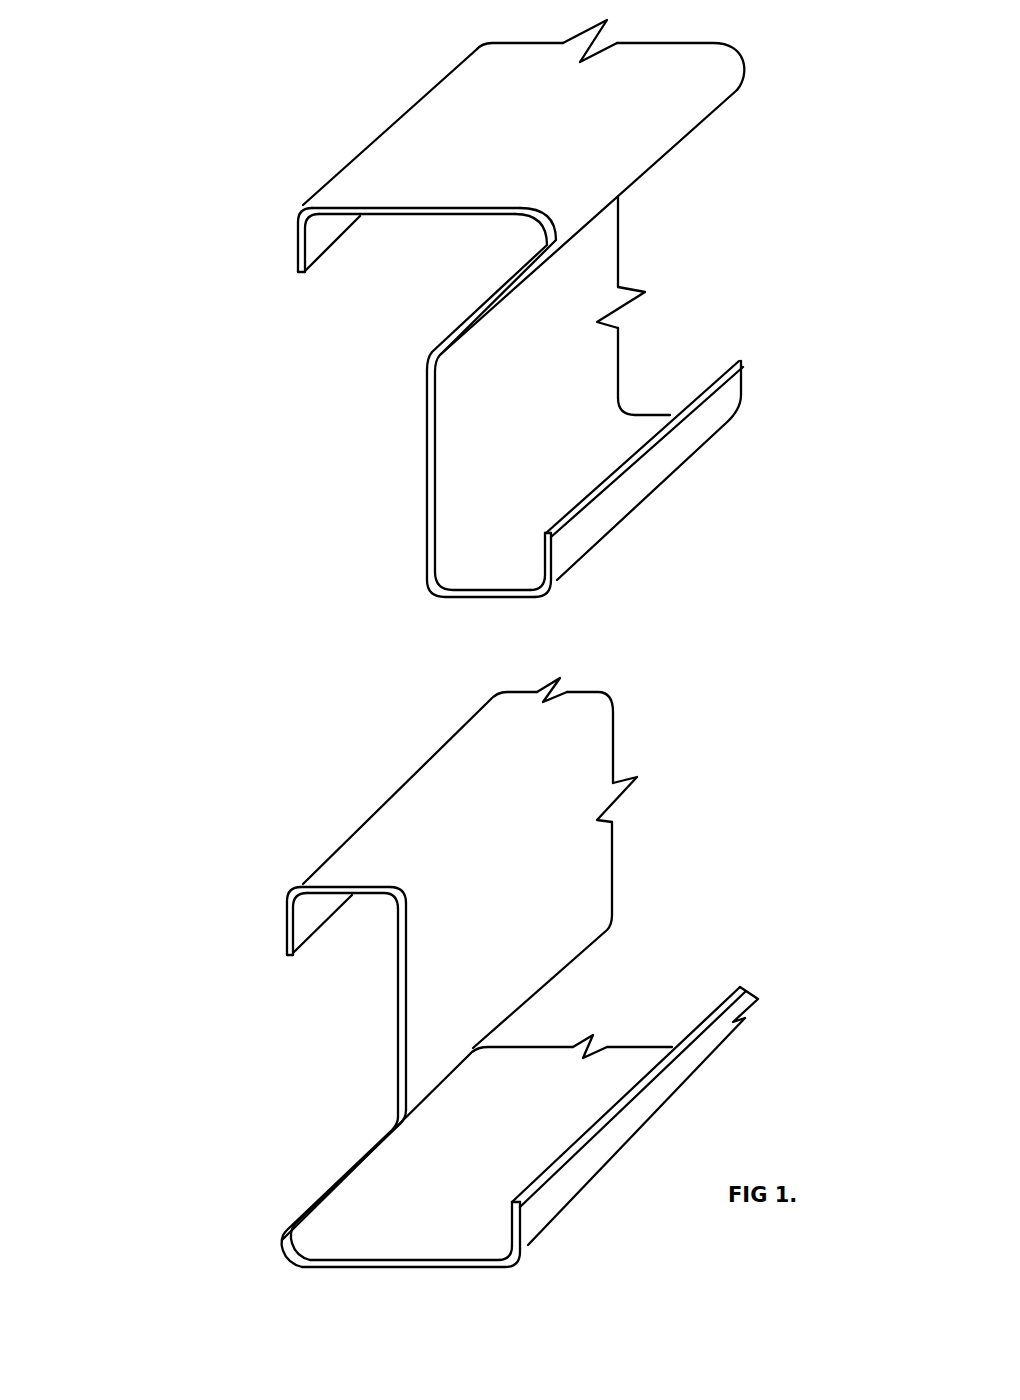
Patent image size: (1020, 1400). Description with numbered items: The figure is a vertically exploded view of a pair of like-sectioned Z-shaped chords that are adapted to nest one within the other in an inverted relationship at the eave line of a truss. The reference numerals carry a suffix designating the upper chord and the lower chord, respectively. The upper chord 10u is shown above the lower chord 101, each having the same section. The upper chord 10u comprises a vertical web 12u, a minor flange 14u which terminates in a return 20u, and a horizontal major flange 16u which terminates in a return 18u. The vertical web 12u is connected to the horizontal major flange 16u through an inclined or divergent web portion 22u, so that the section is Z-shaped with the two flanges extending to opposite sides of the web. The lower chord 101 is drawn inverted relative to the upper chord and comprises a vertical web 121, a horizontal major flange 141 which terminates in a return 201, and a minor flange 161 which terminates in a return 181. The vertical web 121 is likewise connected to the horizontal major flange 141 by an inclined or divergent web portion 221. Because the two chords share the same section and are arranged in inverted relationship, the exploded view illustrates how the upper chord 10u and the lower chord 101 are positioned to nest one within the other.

The chord 10u is at (227, 298).
The web 12u is at (427, 435).
The minor flange 14u is at (465, 602).
The major flange 16u is at (408, 177).
The return 18u is at (297, 248).
The return 20u is at (548, 543).
The inclined or divergent web portion 22u is at (481, 299).
The chord 101 is at (250, 826).
The web 121 is at (398, 992).
The major flange 141 is at (527, 697).
The minor flange 161 is at (403, 1238).
The return 181 is at (520, 1216).
The return 201 is at (287, 918).
The inclined or divergent web portion 221 is at (305, 1192).